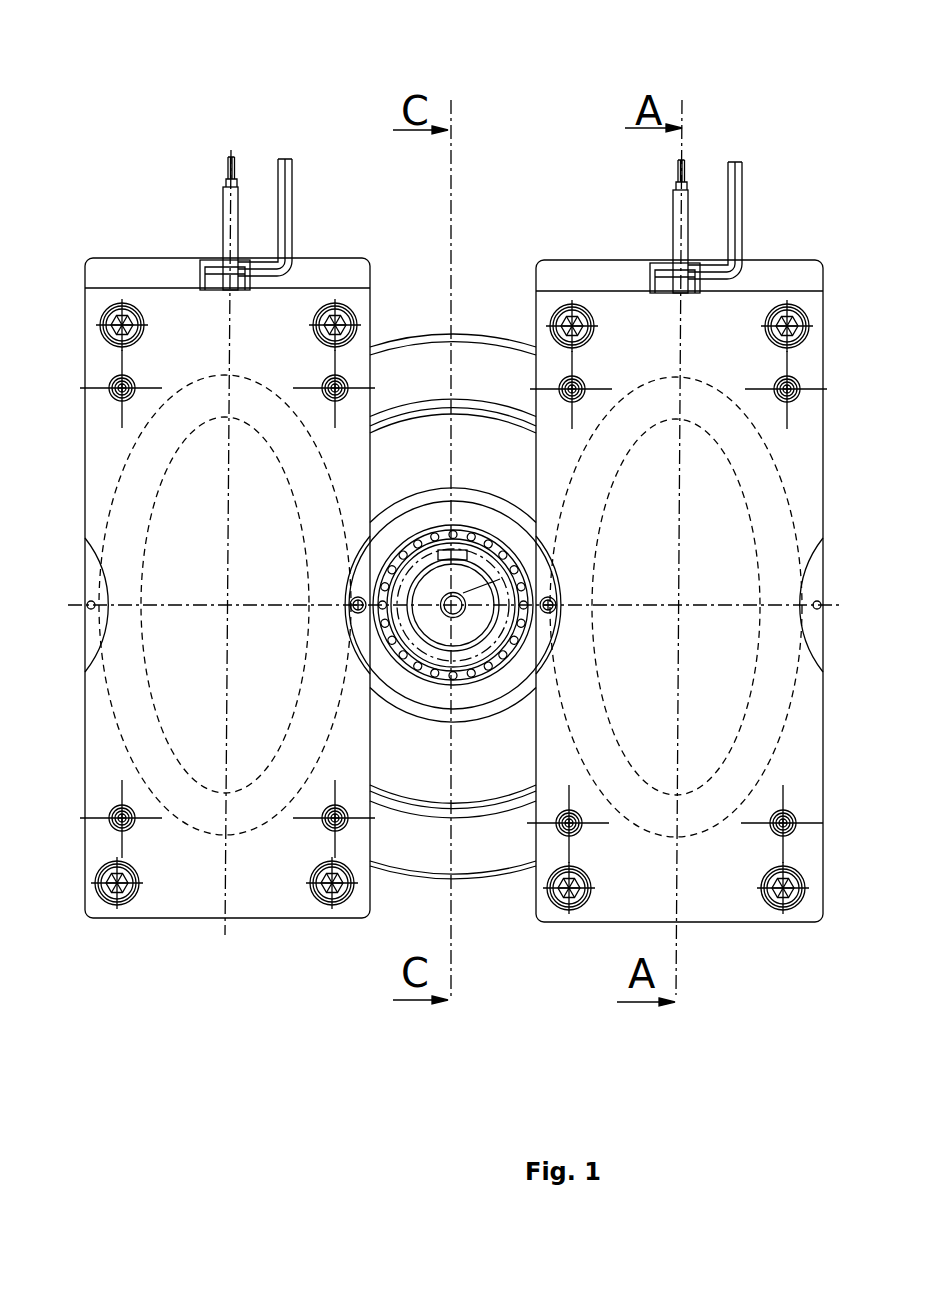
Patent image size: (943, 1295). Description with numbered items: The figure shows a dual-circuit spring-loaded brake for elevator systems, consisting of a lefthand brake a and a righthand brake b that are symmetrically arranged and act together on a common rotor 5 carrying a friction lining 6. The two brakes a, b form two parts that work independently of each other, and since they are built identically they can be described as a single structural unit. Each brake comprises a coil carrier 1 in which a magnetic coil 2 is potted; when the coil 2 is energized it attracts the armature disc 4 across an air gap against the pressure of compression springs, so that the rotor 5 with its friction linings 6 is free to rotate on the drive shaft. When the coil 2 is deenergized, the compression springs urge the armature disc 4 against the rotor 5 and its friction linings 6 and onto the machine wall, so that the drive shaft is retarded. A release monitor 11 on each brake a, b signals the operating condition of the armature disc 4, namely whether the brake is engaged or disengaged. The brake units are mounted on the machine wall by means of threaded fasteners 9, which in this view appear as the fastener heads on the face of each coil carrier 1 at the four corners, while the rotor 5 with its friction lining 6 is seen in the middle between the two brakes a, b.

The coil carrier 1 is at (201, 876).
The magnetic coil 2 is at (645, 829).
The armature disc 4 is at (161, 290).
The rotor 5 is at (492, 333).
The friction lining 6 is at (504, 386).
The threaded fastener 9 is at (121, 322).
The release monitor 11 is at (214, 286).
The lefthand brake a is at (153, 962).
The righthand brake b is at (745, 968).